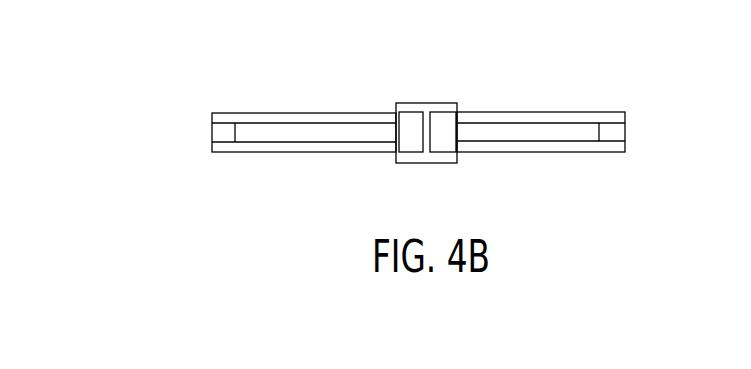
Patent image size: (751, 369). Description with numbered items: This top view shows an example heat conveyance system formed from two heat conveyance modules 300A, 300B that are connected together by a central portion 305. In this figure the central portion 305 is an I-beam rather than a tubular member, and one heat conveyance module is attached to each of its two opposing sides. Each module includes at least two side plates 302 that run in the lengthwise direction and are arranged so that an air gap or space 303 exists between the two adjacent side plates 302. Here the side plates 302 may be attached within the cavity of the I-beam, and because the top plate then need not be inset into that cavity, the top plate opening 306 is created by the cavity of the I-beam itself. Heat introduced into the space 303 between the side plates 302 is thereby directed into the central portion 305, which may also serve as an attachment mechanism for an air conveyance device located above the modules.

The heat conveyance module 300A is at (198, 117).
The heat conveyance module 300B is at (634, 110).
The side plate 302 is at (555, 152).
The air gap or space 303 is at (550, 128).
The central portion 305 is at (427, 103).
The top plate opening 306 is at (467, 113).